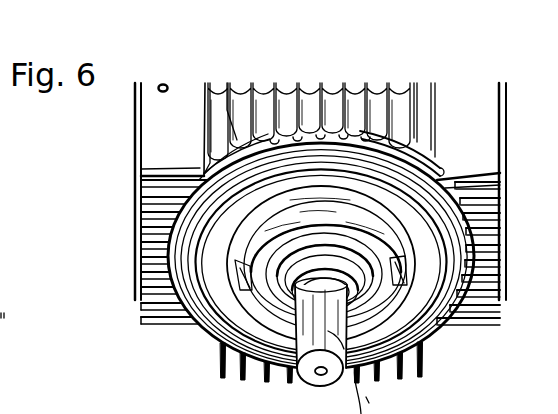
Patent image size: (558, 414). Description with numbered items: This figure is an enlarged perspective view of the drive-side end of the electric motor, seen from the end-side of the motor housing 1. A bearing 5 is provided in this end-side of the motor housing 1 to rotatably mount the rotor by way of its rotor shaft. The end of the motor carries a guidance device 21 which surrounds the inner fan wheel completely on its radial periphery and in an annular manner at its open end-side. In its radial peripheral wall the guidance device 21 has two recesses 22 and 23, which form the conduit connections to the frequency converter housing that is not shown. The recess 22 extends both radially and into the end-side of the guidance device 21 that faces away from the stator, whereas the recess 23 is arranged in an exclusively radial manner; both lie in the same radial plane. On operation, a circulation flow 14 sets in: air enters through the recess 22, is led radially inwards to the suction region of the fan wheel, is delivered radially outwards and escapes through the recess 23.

The motor housing 1 is at (476, 119).
The bearings 5 is at (248, 297).
The circulation flow 14 is at (239, 137).
The guidance device 21 is at (437, 337).
The recess 22 is at (404, 152).
The recess 23 is at (207, 148).